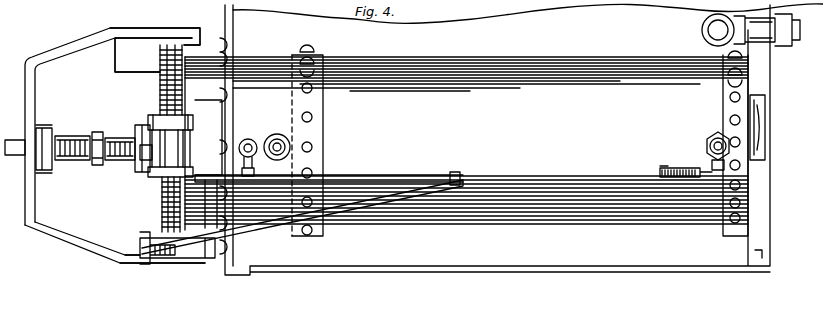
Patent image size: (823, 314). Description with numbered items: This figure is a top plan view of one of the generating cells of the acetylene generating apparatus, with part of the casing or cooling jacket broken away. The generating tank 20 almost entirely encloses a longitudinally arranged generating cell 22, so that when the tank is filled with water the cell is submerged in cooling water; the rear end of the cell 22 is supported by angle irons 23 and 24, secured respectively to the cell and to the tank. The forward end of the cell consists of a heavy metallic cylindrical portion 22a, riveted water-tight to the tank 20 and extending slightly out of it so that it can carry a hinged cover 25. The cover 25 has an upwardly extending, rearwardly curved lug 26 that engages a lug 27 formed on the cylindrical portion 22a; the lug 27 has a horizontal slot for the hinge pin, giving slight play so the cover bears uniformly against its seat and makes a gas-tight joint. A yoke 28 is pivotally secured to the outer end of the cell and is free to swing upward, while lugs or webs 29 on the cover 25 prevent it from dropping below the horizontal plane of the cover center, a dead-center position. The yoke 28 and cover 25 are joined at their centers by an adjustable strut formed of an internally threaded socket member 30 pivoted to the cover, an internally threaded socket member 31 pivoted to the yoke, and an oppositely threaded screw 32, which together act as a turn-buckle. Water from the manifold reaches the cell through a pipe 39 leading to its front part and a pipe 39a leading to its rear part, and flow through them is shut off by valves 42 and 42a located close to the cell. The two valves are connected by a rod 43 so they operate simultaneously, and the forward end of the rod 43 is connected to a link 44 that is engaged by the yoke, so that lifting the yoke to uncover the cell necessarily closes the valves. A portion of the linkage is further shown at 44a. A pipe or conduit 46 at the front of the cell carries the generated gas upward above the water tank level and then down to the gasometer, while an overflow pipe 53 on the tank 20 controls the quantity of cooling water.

The generating tank 20 is at (602, 272).
The generating cell 22 is at (466, 140).
The cylindrical portion 22a is at (182, 205).
The angle iron 23 is at (746, 106).
The angle iron 24 is at (748, 246).
The hinged cover 25 is at (164, 86).
The upwardly extending lug 26 is at (186, 122).
The lug 27 is at (197, 152).
The yoke 28 is at (34, 240).
The lug or web 29 is at (118, 32).
The internally threaded socket member 30 is at (122, 135).
The internally threaded socket member 31 is at (60, 138).
The oppositely threaded screw 32 is at (97, 166).
The pipe 39 is at (251, 140).
The pipe 39a is at (706, 138).
The valve 42 is at (280, 130).
The valve 42a is at (706, 149).
The rod 43 is at (417, 173).
The link 44 is at (186, 258).
The diagonal link 44a is at (333, 208).
The pipe or conduit 46 is at (292, 140).
The overflow pipe 53 is at (704, 30).